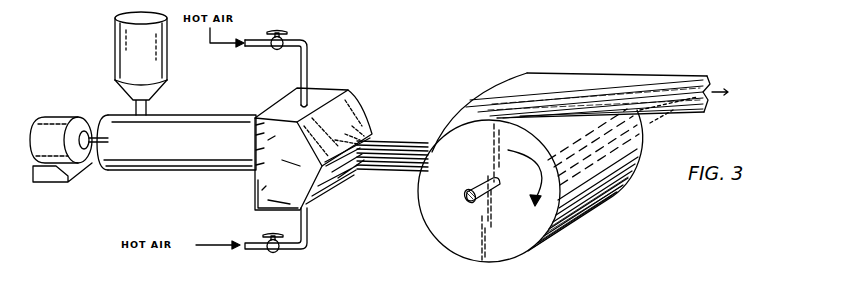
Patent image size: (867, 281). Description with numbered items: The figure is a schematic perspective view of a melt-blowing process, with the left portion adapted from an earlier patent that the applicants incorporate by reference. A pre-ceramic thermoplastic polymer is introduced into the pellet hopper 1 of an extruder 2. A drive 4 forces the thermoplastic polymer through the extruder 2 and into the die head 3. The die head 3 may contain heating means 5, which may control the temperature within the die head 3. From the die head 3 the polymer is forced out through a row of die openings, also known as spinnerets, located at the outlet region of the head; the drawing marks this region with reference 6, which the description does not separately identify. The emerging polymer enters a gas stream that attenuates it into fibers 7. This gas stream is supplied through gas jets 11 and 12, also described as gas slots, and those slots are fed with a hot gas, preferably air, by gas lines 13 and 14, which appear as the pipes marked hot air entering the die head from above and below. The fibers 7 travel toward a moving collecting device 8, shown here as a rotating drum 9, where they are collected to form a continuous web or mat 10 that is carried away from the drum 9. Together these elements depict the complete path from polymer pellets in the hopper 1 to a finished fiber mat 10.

The pellet hopper 1 is at (117, 50).
The extruder 2 is at (182, 117).
The die head 3 is at (333, 82).
The drive 4 is at (56, 135).
The heating means 5 is at (263, 189).
The die outlet 6 is at (366, 139).
The fibers 7 is at (414, 140).
The moving collecting device 8 is at (490, 81).
The drum 9 is at (427, 227).
The mat 10 is at (627, 75).
The gas jet 11 is at (362, 126).
The gas jet 12 is at (331, 181).
The gas line 13 is at (301, 72).
The gas line 14 is at (307, 246).